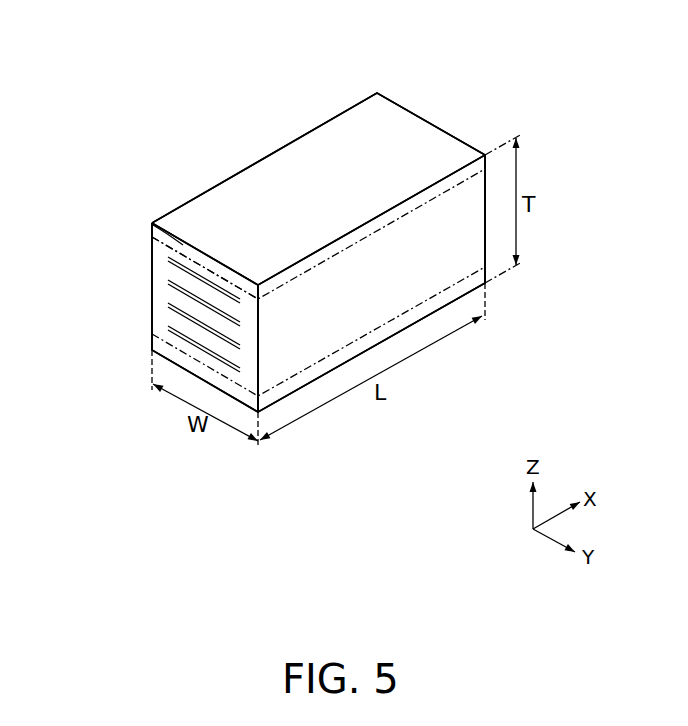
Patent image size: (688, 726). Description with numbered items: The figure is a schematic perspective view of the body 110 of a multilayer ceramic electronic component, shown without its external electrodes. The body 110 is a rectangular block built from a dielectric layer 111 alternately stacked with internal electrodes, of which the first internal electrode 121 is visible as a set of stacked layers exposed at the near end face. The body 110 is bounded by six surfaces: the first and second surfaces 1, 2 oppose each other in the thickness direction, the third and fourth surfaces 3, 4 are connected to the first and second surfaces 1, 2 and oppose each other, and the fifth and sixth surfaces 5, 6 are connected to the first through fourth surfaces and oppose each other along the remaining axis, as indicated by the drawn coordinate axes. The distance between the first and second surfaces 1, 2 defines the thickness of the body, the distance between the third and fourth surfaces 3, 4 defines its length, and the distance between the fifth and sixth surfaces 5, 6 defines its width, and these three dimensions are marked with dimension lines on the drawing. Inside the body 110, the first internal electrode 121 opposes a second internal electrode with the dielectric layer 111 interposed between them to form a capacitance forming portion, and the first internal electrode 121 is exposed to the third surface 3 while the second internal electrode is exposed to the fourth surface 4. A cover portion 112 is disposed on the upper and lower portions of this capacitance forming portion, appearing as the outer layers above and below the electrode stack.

The first surface 1 is at (292, 343).
The second surface 2 is at (255, 188).
The third surface 3 is at (177, 293).
The fourth surface 4 is at (442, 151).
The fifth surface 5 is at (383, 296).
The sixth surface 6 is at (212, 217).
The body 110 is at (337, 140).
The dielectric layer 111 is at (173, 272).
The cover portion 112 is at (152, 222).
The first internal electrode 121 is at (152, 252).